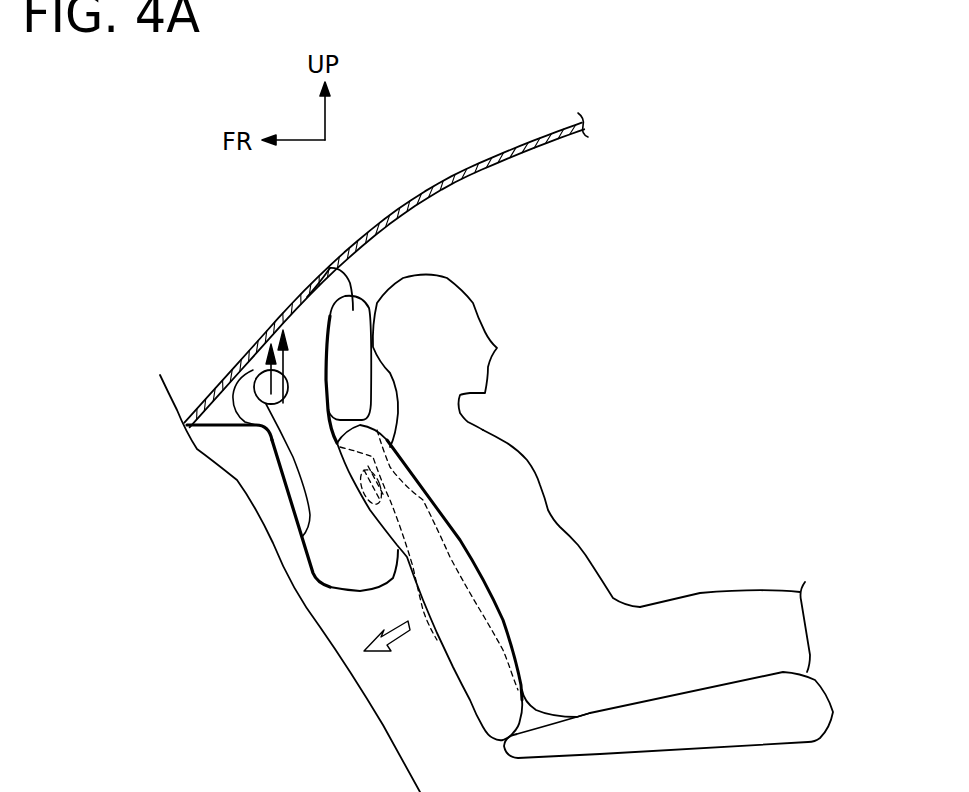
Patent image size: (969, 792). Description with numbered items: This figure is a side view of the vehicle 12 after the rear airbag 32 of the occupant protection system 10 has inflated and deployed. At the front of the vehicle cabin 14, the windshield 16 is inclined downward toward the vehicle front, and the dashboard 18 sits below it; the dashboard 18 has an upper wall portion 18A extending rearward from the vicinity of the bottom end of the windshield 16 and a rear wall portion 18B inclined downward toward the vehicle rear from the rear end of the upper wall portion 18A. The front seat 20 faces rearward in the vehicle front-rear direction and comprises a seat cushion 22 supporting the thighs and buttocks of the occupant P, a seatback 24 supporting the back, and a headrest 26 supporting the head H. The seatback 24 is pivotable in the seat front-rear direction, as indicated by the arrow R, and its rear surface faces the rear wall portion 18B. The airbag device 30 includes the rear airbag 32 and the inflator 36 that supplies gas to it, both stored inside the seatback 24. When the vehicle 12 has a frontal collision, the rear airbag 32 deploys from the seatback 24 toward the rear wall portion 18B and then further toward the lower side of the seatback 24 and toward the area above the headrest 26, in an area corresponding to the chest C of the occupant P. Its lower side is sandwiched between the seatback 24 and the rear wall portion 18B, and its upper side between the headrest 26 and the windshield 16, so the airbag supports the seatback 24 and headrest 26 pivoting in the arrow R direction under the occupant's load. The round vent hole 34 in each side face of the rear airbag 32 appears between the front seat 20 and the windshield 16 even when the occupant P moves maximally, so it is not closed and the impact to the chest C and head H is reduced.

The occupant protection system 10 is at (361, 279).
The vehicle 12 is at (196, 180).
The vehicle cabin 14 is at (428, 220).
The front windshield glass 16 is at (543, 134).
The dashboard 18 is at (250, 277).
The upper wall portion 18A is at (230, 419).
The rear wall portion 18B is at (230, 419).
The front seat 20 is at (494, 590).
The seat cushion 22 is at (812, 720).
The seatback 24 is at (488, 702).
The headrest 26 is at (370, 300).
The airbag device 30 is at (346, 591).
The rear airbag 32 is at (322, 553).
The vent hole 34 is at (288, 384).
The inflator 36 is at (425, 620).
The head H is at (452, 292).
The occupant P is at (488, 322).
The chest C is at (524, 473).
The arrow R direction R is at (387, 623).